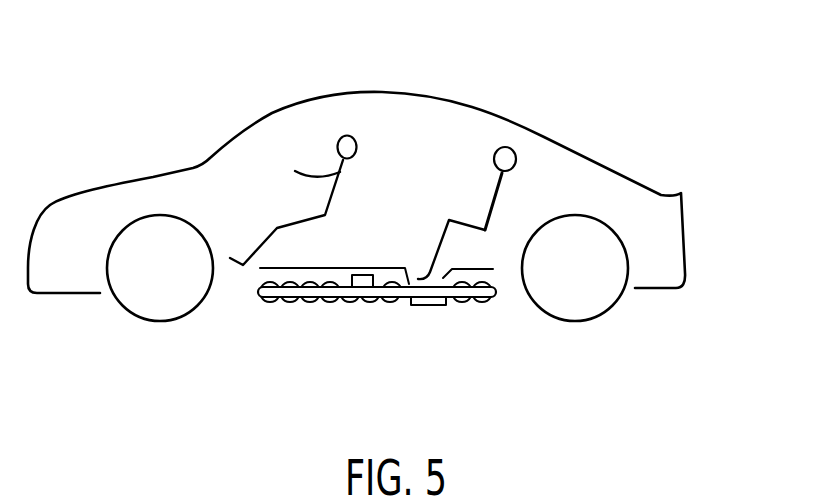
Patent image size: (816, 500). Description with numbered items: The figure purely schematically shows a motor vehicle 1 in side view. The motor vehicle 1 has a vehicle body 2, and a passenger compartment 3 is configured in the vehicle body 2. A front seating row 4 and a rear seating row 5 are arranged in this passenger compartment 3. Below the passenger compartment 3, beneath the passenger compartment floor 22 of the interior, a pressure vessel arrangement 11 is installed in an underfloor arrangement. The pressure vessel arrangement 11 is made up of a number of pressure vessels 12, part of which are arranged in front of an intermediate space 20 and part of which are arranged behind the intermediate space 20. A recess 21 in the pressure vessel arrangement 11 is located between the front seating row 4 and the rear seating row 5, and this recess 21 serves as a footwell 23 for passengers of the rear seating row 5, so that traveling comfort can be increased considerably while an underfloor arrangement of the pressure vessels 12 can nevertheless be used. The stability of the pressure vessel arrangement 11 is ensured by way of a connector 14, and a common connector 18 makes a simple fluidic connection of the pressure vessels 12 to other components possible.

The motor vehicle 1 is at (381, 243).
The vehicle body 2 is at (594, 164).
The passenger compartment 3 is at (362, 142).
The front seating row 4 is at (314, 161).
The rear seating row 5 is at (462, 198).
The pressure vessel arrangement 11 is at (346, 308).
The pressure vessels 12 is at (482, 307).
The connector 14 is at (257, 300).
The common connector 18 is at (360, 268).
The intermediate space 20 is at (425, 307).
The recess 21 is at (405, 268).
The passenger compartment floor 22 is at (298, 267).
The footwell 23 is at (452, 269).